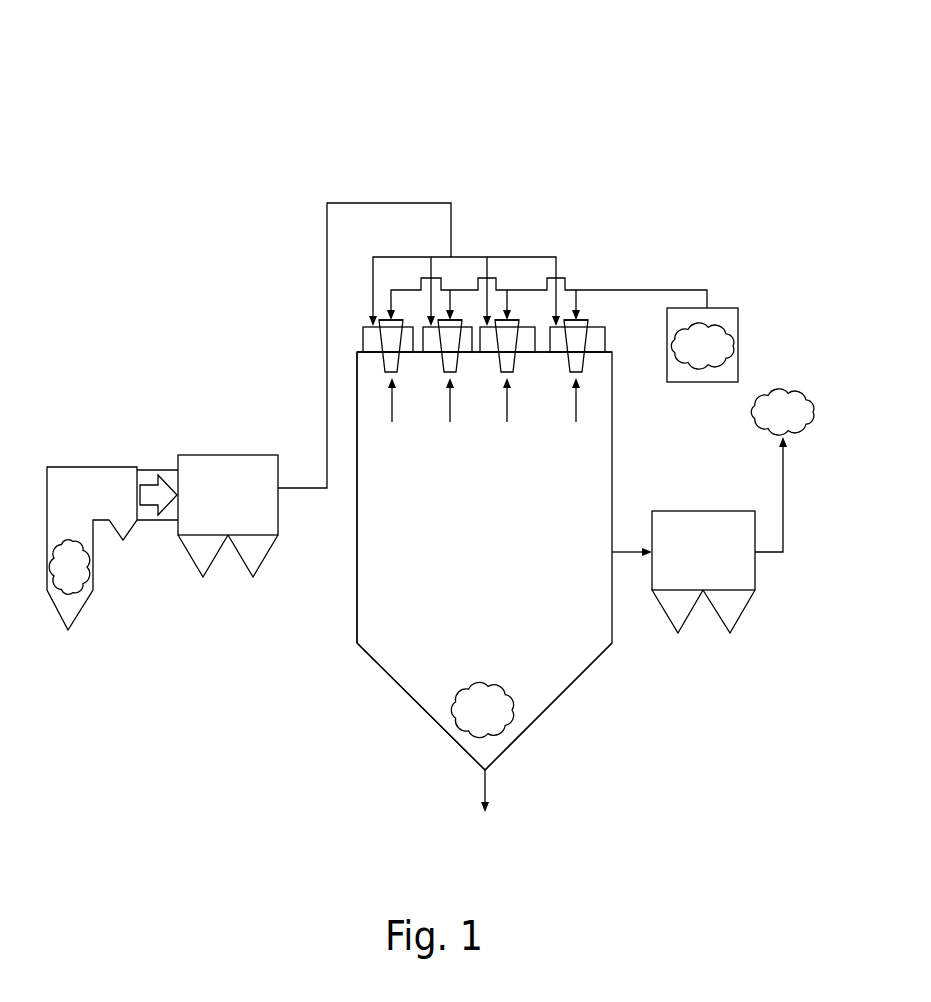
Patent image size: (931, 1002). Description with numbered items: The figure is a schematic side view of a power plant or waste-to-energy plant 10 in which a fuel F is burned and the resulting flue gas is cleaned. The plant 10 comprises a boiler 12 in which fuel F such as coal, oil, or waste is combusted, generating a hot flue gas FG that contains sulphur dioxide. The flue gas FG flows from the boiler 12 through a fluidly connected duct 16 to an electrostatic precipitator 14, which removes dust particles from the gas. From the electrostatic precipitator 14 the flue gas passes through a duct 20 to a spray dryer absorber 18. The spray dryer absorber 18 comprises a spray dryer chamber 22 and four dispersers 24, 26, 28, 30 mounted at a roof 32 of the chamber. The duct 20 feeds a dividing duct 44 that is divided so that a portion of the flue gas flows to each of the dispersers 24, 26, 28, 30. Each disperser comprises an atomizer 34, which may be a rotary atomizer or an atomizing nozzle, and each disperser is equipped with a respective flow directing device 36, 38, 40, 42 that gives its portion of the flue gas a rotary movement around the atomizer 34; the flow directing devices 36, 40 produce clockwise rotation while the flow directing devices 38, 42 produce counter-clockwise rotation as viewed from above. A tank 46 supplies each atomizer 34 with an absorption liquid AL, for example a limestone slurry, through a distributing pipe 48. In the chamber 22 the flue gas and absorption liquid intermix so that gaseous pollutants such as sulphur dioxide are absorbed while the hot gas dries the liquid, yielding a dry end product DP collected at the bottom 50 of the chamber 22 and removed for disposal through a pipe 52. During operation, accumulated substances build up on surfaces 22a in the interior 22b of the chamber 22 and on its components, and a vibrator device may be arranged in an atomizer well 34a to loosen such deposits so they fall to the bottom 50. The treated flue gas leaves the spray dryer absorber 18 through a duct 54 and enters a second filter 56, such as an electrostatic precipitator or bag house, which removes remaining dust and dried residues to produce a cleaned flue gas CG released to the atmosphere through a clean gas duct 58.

The power plant 10 is at (228, 118).
The boiler 12 is at (90, 467).
The electrostatic precipitator 14 is at (230, 455).
The duct 16 is at (155, 470).
The spray dryer absorber 18 is at (369, 699).
The duct 20 is at (327, 231).
The spray dryer chamber 22 is at (357, 623).
The surfaces 22a is at (360, 494).
The interior 22b is at (374, 567).
The disperser 24 is at (392, 422).
The disperser 26 is at (450, 422).
The disperser 28 is at (507, 422).
The disperser 30 is at (576, 422).
The roof 32 is at (357, 350).
The atomizer 34 is at (398, 357).
The atomizer well 34a is at (380, 335).
The flow directing device 36 is at (372, 352).
The flow directing device 38 is at (430, 352).
The flow directing device 40 is at (488, 352).
The flow directing device 42 is at (556, 352).
The dividing duct 44 is at (524, 257).
The tank 46 is at (725, 308).
The distributing pipe 48 is at (672, 289).
The bottom 50 is at (558, 700).
The pipe 52 is at (487, 790).
The duct 54 is at (631, 552).
The second filter 56 is at (703, 511).
The clean gas duct 58 is at (767, 560).